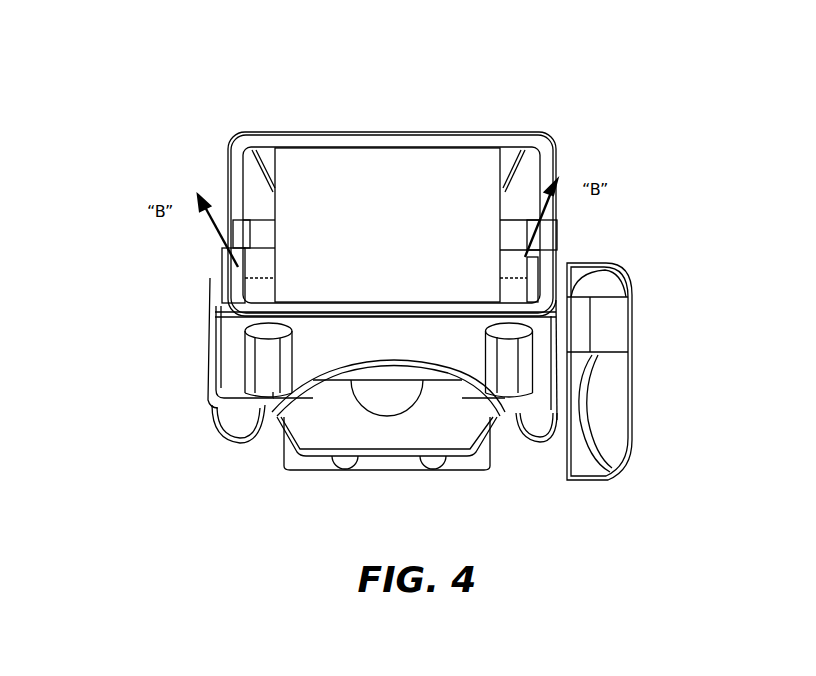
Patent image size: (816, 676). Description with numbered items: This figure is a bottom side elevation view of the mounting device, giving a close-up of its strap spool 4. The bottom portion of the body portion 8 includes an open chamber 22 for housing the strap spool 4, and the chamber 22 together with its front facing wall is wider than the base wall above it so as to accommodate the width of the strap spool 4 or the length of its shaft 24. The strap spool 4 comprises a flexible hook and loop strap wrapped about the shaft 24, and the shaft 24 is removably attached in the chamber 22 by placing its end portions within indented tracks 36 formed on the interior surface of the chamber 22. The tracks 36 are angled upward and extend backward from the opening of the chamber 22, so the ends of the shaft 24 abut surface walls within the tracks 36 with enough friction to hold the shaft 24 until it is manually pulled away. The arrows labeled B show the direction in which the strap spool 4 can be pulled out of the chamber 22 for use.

The strap spool 4 is at (455, 175).
The body portion 8 is at (377, 131).
The open chamber 22 is at (263, 208).
The shaft 24 is at (263, 265).
The indented tracks 36 is at (537, 243).